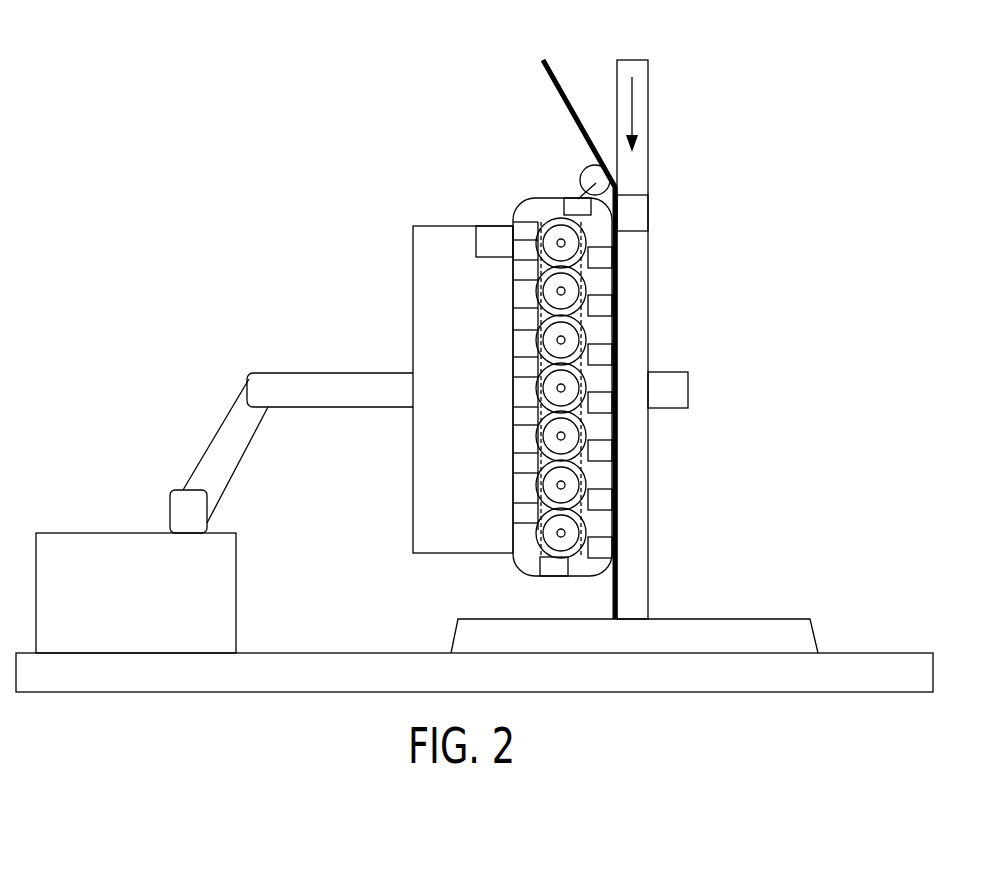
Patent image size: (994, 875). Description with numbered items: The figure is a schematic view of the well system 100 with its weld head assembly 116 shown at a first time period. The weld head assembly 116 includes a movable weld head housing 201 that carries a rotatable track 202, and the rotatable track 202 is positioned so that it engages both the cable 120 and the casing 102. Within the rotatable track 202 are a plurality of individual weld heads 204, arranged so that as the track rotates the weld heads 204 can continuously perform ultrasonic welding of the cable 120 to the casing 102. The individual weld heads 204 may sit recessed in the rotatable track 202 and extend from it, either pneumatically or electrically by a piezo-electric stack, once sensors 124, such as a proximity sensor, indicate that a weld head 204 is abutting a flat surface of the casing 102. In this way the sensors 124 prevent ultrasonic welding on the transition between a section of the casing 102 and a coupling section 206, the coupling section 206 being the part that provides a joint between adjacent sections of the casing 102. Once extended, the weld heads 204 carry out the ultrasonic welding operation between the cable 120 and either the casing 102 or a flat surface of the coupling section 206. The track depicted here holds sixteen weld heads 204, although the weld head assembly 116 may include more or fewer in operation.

The well system 100 is at (245, 99).
The casing 102 is at (648, 318).
The weld head assembly 116 is at (413, 323).
The cable 120 is at (562, 72).
The sensors 124 is at (477, 242).
The movable weld head housing 201 is at (526, 160).
The rotatable track 202 is at (522, 204).
The individual weld heads 204 is at (617, 343).
The coupling section 206 is at (642, 212).